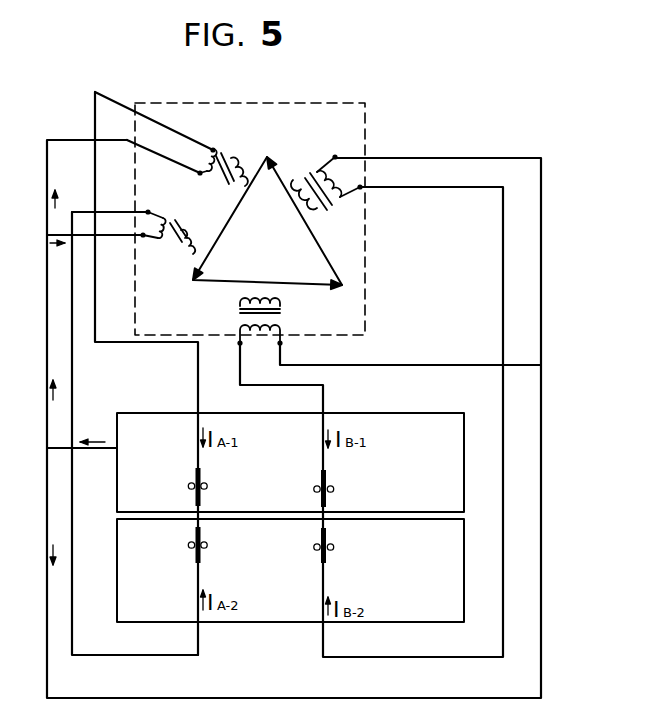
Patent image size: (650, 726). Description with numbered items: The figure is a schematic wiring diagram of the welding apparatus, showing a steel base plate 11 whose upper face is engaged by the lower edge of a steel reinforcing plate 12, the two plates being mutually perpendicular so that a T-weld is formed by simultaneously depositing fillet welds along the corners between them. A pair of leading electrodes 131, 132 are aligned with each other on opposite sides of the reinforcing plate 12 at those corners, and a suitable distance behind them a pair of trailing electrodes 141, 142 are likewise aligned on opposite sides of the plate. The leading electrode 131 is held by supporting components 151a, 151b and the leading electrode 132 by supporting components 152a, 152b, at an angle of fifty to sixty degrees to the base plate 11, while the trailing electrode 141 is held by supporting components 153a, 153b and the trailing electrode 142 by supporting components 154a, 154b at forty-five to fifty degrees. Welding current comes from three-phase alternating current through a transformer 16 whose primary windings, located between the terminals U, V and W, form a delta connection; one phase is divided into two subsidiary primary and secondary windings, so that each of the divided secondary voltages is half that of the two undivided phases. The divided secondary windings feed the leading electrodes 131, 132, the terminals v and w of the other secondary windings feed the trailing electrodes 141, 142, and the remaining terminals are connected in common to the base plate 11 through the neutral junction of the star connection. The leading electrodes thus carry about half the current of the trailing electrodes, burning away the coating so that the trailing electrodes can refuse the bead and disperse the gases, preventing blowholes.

The transformer 16 is at (283, 102).
The base plate 11 is at (457, 427).
The reinforcing plate 12 is at (464, 517).
The leading electrode 131 is at (202, 472).
The leading electrode 132 is at (202, 562).
The trailing electrode 141 is at (327, 474).
The trailing electrode 142 is at (327, 563).
The supporting component 151a is at (188, 486).
The supporting component 151b is at (208, 486).
The supporting component 152a is at (188, 545).
The supporting component 152b is at (208, 545).
The supporting component 153a is at (314, 488).
The supporting component 153b is at (334, 489).
The supporting component 154a is at (314, 547).
The supporting component 154b is at (334, 547).